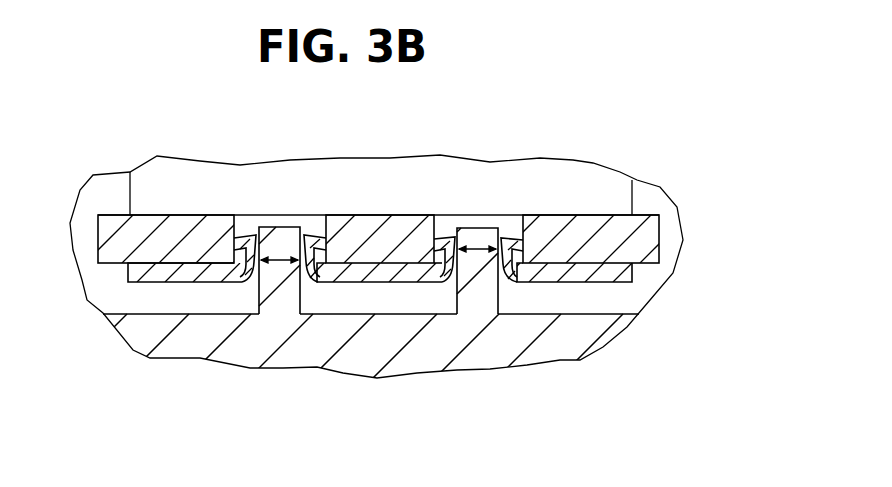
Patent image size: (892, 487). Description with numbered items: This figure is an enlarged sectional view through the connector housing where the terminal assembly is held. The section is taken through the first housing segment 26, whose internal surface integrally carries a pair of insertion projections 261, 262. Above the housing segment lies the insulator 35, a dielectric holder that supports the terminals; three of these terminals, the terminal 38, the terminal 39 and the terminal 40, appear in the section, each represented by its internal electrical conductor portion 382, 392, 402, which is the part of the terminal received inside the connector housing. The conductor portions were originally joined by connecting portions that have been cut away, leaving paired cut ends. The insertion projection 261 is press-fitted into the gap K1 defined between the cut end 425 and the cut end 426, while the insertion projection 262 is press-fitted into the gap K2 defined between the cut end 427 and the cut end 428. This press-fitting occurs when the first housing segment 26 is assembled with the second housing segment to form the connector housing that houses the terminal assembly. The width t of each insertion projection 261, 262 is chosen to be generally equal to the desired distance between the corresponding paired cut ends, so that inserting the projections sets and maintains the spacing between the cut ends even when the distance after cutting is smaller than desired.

The first housing segment 26 is at (370, 269).
The insulator 35 is at (623, 199).
The terminal 38 is at (386, 312).
The internal electrical conductor portion 382 is at (178, 272).
The terminal 39 is at (463, 288).
The internal electrical conductor portion 392 is at (627, 277).
The terminal 40 is at (386, 335).
The internal electrical conductor portion 402 is at (395, 275).
The insertion projection 261 is at (480, 232).
The insertion projection 262 is at (288, 232).
The cut end 425 is at (509, 239).
The cut end 426 is at (447, 238).
The cut end 427 is at (310, 236).
The cut end 428 is at (252, 236).
The width of insertion projection t is at (280, 262).
The gap K1 is at (503, 280).
The gap K2 is at (305, 285).